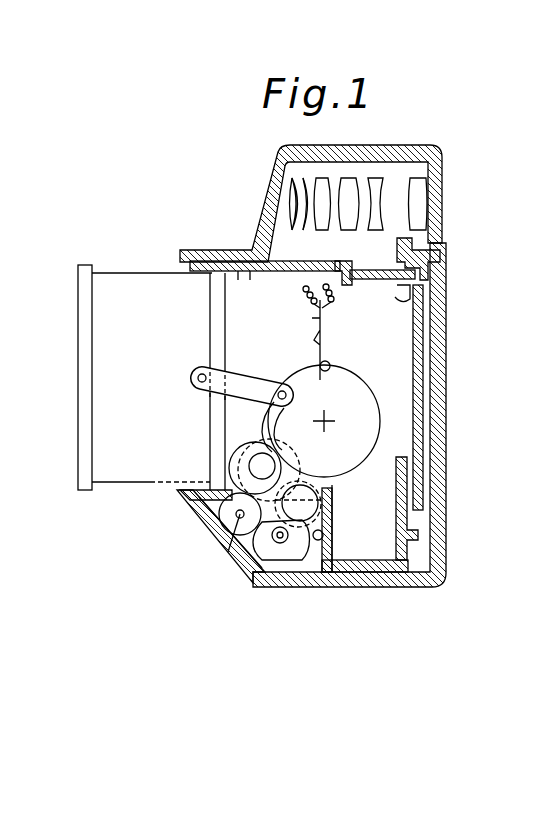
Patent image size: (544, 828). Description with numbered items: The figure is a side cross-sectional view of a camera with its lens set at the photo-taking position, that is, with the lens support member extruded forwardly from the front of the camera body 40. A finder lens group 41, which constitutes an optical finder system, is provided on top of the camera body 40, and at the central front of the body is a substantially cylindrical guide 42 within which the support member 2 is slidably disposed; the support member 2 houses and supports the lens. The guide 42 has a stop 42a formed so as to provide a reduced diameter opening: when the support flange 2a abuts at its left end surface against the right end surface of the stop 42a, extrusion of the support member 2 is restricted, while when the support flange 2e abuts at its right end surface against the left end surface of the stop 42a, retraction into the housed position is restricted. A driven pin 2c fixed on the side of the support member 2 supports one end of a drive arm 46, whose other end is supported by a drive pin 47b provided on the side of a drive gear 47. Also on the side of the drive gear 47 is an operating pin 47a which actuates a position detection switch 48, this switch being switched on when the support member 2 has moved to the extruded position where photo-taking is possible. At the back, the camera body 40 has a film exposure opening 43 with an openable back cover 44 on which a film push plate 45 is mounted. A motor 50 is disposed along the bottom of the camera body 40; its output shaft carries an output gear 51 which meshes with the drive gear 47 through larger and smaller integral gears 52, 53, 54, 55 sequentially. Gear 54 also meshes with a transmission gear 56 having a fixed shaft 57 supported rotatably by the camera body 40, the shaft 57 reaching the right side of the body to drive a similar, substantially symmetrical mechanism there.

The support member 2 is at (127, 341).
The support flange 2a is at (210, 422).
The drive pin 2c is at (200, 372).
The support flange 2e is at (82, 265).
The camera body 40 is at (428, 598).
The finder lens group 41 is at (387, 203).
The guide 42 is at (231, 250).
The stop 42a is at (185, 262).
The film exposure opening 43 is at (405, 308).
The back cover 44 is at (438, 478).
The film push plate 45 is at (418, 366).
The drive arm 46 is at (236, 372).
The drive gear 47 is at (372, 425).
The operating pin 47a is at (333, 364).
The drive pin 47b is at (280, 387).
The position detection switch 48 is at (324, 320).
The motor 50 is at (278, 558).
The output gear 51 is at (252, 566).
The integral gear 52 is at (298, 528).
The integral gear 53 is at (322, 505).
The integral gear 54 is at (230, 463).
The integral gear 55 is at (268, 440).
The transmission gear 56 is at (224, 514).
The fixed shaft 57 is at (230, 540).